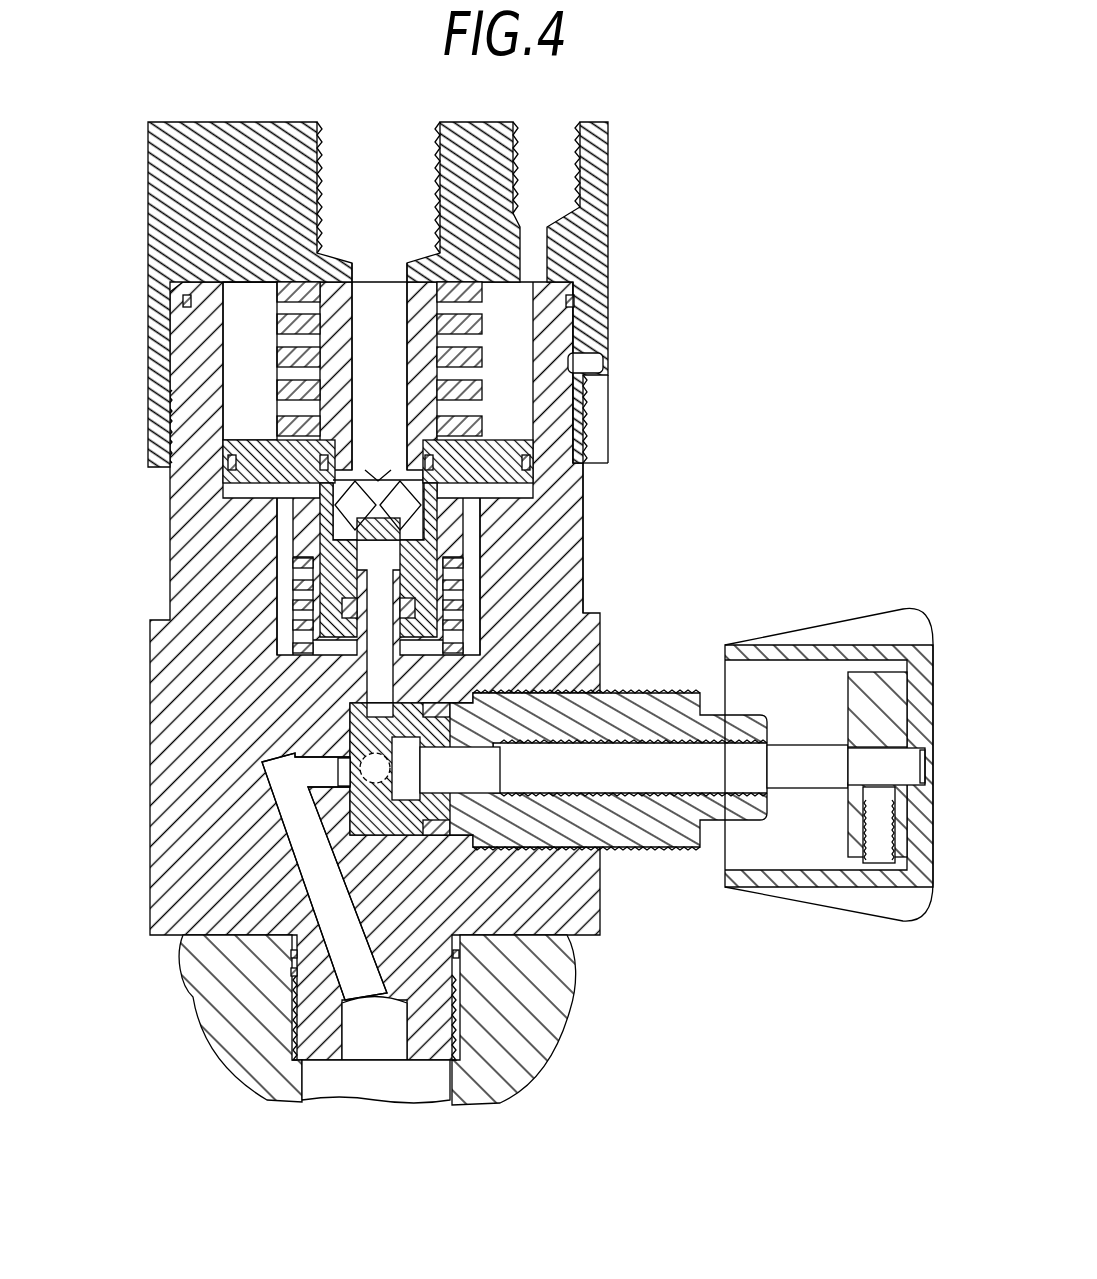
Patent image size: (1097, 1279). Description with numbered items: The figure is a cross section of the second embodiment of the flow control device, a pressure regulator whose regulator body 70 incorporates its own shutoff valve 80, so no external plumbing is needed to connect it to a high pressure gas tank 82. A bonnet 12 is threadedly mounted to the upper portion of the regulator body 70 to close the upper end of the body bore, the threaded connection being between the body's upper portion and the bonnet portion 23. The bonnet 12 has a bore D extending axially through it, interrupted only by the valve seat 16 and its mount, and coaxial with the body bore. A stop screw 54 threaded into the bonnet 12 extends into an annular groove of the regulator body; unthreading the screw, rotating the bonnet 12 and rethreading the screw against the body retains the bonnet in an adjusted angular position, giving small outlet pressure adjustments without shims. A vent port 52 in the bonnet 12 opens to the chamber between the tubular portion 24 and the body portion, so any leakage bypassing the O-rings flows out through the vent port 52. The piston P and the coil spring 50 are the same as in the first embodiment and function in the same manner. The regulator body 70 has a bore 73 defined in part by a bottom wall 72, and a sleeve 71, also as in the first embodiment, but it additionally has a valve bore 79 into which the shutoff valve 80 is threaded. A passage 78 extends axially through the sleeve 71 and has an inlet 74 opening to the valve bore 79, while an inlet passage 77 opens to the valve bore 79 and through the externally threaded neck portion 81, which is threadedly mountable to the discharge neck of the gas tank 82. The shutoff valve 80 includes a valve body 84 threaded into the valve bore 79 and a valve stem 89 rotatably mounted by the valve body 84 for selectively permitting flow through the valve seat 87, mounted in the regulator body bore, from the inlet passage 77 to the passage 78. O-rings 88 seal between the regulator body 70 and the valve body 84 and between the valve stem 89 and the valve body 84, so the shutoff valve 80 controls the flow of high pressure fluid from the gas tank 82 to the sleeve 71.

The bonnet 12 is at (136, 220).
The bore D is at (318, 172).
The vent port 52 is at (564, 180).
The stop screw 54 is at (604, 363).
The bonnet portion 23 is at (609, 413).
The tubular portion 24 is at (406, 338).
The coil spring 50 is at (486, 350).
The piston P is at (250, 440).
The valve seat 16 is at (373, 497).
The regulator body 70 is at (160, 542).
The sleeve 71 is at (330, 666).
The bottom wall 72 is at (482, 620).
The bore 73 is at (483, 542).
The inlet 74 is at (427, 688).
The passage 78 is at (337, 674).
The valve bore 79 is at (546, 855).
The valve body 84 is at (638, 710).
The O-rings 88 is at (432, 713).
The valve stem 89 is at (687, 772).
The valve seat 87 is at (343, 789).
The shutoff valve 80 is at (830, 918).
The gas tank 82 is at (538, 975).
The inlet passage 77 is at (300, 958).
The externally threaded neck portion 81 is at (322, 1038).